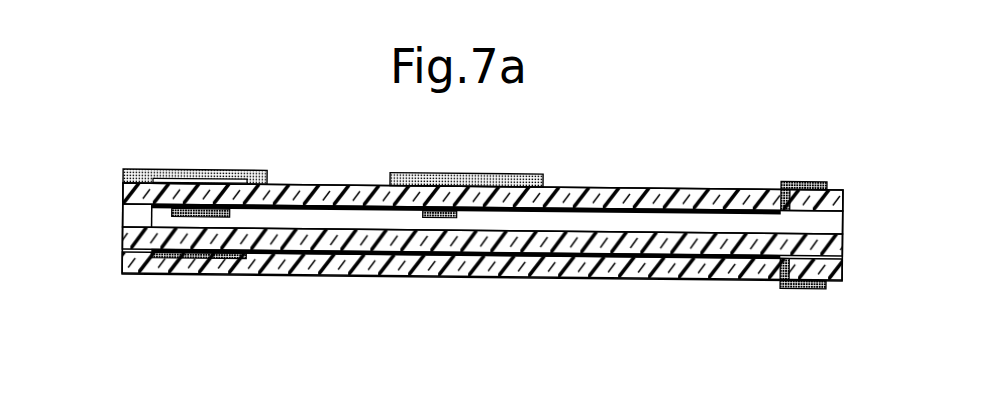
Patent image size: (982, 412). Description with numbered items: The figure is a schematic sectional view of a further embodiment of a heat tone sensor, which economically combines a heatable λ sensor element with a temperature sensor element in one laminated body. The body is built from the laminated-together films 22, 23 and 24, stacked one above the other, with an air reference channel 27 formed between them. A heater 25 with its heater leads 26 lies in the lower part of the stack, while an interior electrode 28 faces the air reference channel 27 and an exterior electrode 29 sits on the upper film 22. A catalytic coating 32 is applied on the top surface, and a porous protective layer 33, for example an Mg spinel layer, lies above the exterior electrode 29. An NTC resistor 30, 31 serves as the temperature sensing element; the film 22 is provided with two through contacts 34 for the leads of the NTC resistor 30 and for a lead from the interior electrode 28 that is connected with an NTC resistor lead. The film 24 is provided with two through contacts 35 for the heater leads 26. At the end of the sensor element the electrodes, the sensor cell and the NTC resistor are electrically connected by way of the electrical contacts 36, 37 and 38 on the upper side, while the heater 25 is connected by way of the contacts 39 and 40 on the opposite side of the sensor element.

The film 22 is at (123, 186).
The film 23 is at (123, 243).
The film 24 is at (151, 275).
The heater 25 is at (227, 274).
The heater leads 26 is at (484, 274).
The air reference channel 27 is at (846, 222).
The interior electrode 28 is at (152, 222).
The exterior electrode 29 is at (200, 169).
The NTC resistor 30 is at (415, 169).
The inner conductor pad 31 is at (424, 210).
The catalytic coating 32 is at (506, 173).
The porous protective layer 33 is at (139, 168).
The through contacts 34 is at (779, 191).
The through contacts 35 is at (776, 281).
The electrical contact 36 is at (839, 161).
The electrical contact 37 is at (839, 161).
The electrical contact 38 is at (810, 183).
The contact 39 is at (824, 310).
The contact 40 is at (813, 289).